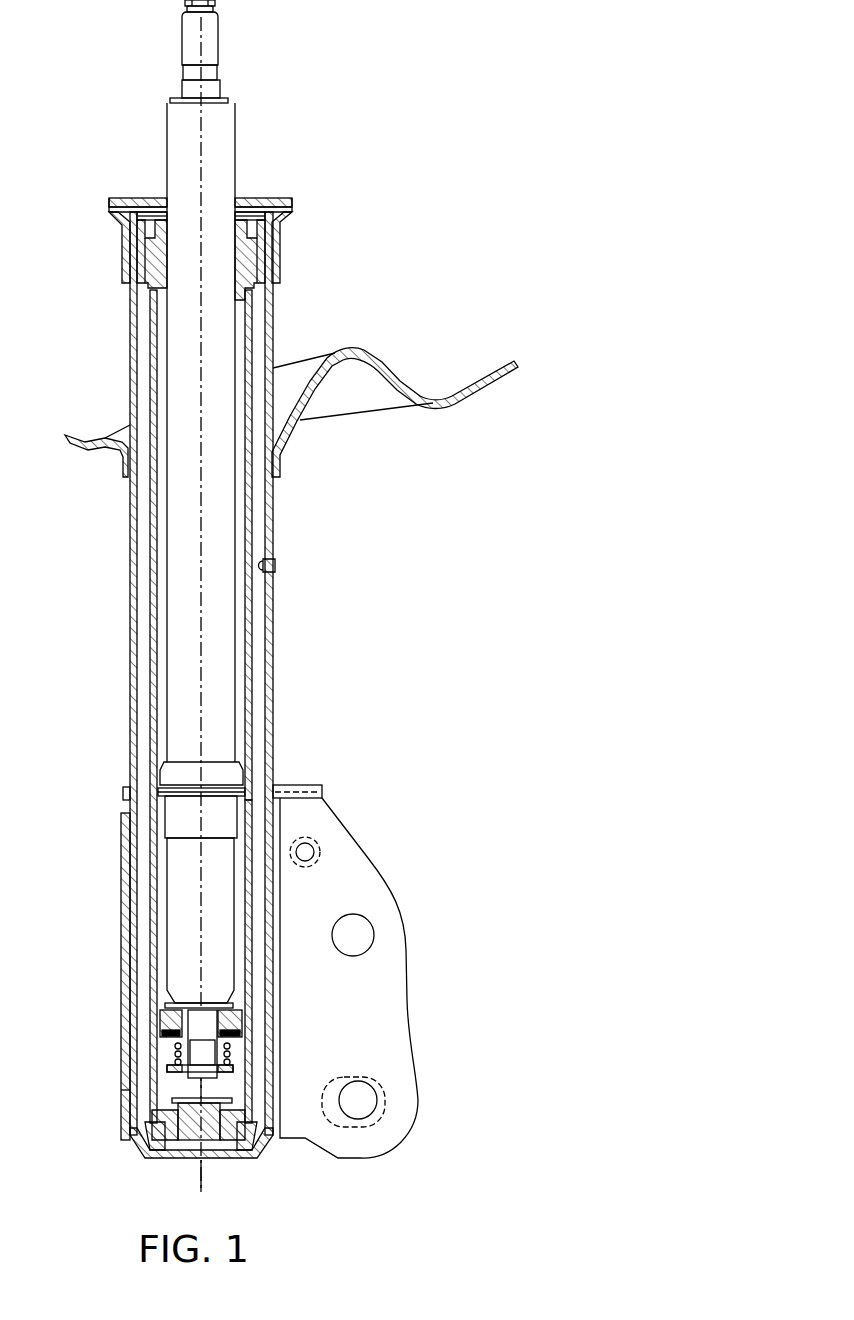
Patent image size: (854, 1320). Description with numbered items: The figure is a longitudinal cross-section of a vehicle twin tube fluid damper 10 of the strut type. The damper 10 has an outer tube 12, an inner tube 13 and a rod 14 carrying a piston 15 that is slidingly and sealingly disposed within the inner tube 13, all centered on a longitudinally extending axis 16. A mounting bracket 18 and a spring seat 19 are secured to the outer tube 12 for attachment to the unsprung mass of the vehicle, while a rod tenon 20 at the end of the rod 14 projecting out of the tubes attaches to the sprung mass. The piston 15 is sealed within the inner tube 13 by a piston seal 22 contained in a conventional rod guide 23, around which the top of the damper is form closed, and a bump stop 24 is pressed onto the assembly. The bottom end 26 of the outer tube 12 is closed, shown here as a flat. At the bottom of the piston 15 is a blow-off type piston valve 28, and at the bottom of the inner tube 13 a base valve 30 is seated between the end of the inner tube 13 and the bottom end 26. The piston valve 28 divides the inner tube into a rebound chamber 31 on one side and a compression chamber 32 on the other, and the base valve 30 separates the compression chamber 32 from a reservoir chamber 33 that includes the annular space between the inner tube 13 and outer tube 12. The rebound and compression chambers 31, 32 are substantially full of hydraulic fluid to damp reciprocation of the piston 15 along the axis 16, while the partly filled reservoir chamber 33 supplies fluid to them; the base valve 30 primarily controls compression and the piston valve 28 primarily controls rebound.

The twin tube fluid damper 10 is at (434, 271).
The outer tube 12 is at (273, 320).
The inner tube 13 is at (250, 615).
The rod 14 is at (237, 717).
The piston 15 is at (160, 1032).
The longitudinally extending axis 16 is at (202, 1177).
The mounting bracket 18 is at (368, 860).
The spring seat 19 is at (477, 388).
The rod tenon 20 is at (214, 35).
The piston seal 22 is at (257, 264).
The rod guide 23 is at (257, 281).
The bump stop 24 is at (293, 203).
The bottom end 26 is at (233, 1160).
The piston valve 28 is at (240, 1050).
The base valve 30 is at (232, 1105).
The rebound chamber 31 is at (163, 943).
The compression chamber 32 is at (165, 1087).
The reservoir chamber 33 is at (258, 927).